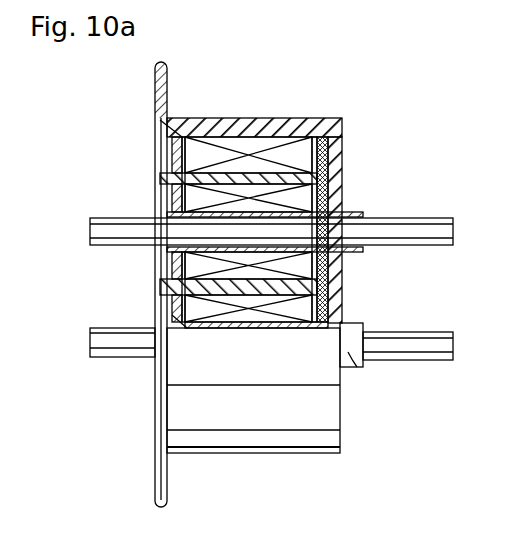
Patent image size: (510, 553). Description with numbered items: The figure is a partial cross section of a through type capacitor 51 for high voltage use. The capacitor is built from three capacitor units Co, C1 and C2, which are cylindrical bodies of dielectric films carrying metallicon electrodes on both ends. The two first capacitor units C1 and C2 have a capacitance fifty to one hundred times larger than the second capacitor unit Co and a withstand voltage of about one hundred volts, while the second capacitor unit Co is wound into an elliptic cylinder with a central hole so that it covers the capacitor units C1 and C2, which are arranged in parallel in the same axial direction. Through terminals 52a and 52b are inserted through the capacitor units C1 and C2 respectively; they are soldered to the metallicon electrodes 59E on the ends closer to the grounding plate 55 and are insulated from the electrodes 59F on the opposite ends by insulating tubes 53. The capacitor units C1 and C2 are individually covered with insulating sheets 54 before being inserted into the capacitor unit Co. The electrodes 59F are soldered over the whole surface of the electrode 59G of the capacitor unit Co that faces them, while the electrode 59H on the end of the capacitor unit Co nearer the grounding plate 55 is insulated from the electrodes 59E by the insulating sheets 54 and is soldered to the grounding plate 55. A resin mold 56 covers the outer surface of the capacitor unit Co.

The through type capacitor 51 is at (88, 428).
The through terminal 52a is at (443, 230).
The through terminal 52b is at (427, 335).
The insulating tube 53 is at (363, 212).
The insulating sheet 54 is at (170, 176).
The grounding plate 55 is at (167, 93).
The resin mold 56 is at (342, 158).
The metallicon electrode 59E is at (172, 195).
The electrode 59F is at (330, 185).
The electrode 59G is at (335, 138).
The electrode 59H is at (177, 158).
The second capacitor unit Co is at (312, 118).
The first capacitor unit C1 is at (175, 200).
The first capacitor unit C2 is at (185, 326).